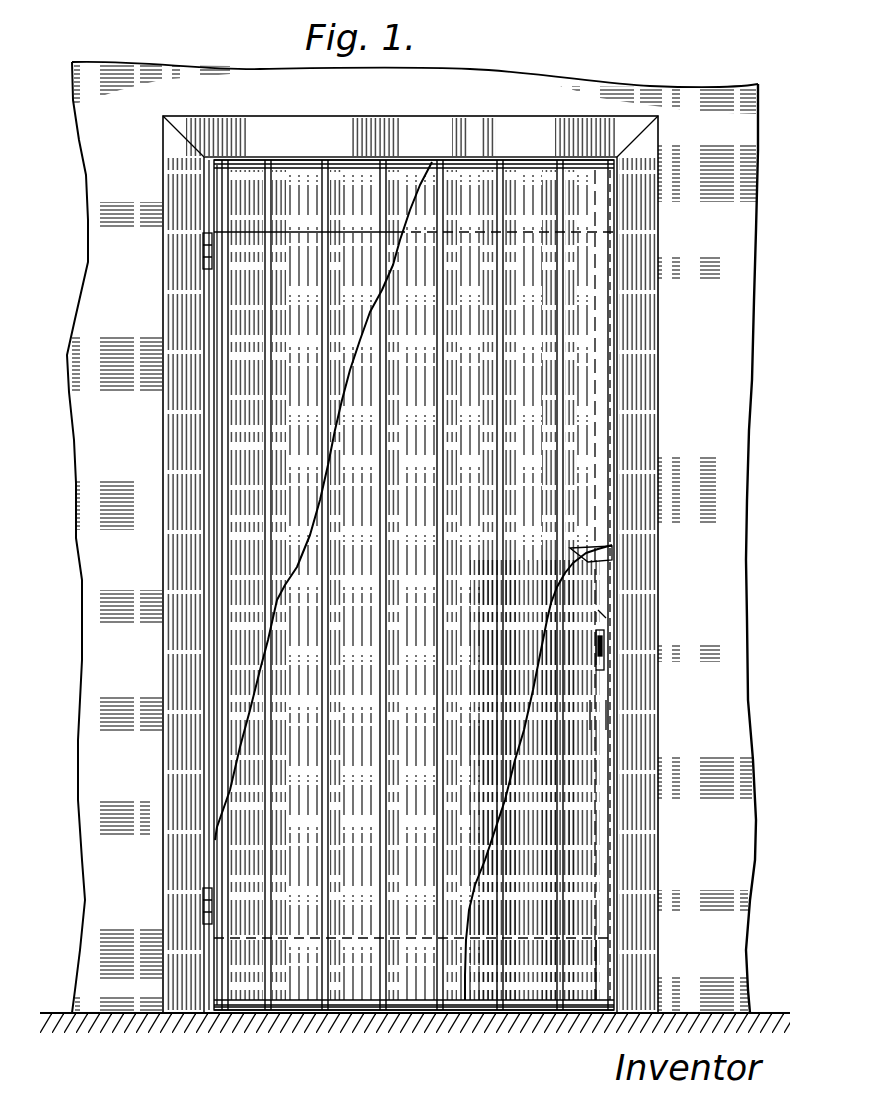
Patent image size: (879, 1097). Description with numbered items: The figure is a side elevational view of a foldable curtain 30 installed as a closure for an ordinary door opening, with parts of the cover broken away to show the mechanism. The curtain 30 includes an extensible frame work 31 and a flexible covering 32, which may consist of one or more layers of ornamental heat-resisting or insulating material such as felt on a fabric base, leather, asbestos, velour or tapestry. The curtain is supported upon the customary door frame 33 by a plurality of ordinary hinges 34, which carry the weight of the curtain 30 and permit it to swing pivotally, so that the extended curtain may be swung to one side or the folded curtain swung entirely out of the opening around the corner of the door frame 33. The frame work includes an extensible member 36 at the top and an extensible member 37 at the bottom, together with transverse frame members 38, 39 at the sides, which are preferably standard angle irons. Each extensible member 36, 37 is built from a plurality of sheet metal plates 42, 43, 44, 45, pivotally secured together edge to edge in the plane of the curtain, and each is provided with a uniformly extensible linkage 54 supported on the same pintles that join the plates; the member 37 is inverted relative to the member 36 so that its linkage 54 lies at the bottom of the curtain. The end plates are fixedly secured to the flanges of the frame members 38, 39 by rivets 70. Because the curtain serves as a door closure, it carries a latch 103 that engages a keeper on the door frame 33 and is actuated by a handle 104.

The foldable curtain 30 is at (461, 544).
The extensible frame work 31 is at (212, 400).
The flexible covering 32 is at (596, 578).
The door frame 33 is at (652, 292).
The hinges 34 is at (203, 245).
The extensible member 36 is at (362, 170).
The extensible member 37 is at (532, 1010).
The transverse frame member 38 is at (214, 516).
The transverse frame member 39 is at (600, 712).
The sheet metal plate 42 is at (250, 175).
The sheet metal plate 43 is at (292, 175).
The sheet metal plate 44 is at (340, 170).
The sheet metal plate 45 is at (402, 188).
The uniformly extensible linkage 54 is at (480, 158).
The rivets 70 is at (603, 946).
The latch 103 is at (608, 622).
The handle 104 is at (604, 650).